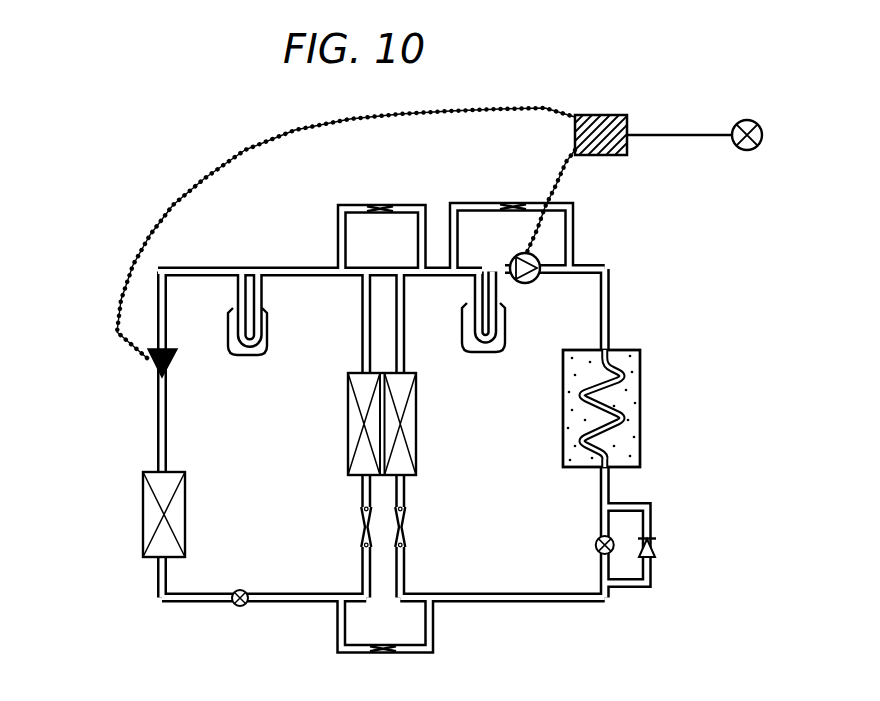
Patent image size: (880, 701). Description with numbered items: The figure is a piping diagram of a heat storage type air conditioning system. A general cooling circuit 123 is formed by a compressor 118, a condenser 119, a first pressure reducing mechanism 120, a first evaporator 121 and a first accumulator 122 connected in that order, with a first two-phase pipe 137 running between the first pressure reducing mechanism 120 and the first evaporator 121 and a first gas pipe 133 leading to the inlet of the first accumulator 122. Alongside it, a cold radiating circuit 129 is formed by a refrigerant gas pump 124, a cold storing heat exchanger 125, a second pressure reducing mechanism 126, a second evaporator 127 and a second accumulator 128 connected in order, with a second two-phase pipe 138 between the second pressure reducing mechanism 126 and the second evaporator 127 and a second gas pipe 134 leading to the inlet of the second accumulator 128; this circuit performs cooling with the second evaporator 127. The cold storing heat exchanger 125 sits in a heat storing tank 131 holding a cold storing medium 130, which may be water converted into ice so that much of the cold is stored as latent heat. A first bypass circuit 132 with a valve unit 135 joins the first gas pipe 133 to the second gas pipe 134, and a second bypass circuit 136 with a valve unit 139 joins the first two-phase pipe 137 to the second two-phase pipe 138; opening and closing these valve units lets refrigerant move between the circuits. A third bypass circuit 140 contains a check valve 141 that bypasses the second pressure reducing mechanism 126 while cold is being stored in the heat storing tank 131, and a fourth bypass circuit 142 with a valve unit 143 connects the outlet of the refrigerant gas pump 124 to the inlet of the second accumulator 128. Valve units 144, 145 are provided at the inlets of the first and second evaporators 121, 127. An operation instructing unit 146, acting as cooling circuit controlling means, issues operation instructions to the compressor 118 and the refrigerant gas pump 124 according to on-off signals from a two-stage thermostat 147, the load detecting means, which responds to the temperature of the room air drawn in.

The compressor 118 is at (172, 364).
The condenser 119 is at (186, 505).
The first pressure reducing mechanism 120 is at (247, 592).
The first evaporator 121 is at (352, 442).
The first accumulator 122 is at (253, 357).
The general cooling circuit 123 is at (293, 604).
The refrigerant gas pump 124 is at (534, 280).
The cold storing heat exchanger 125 is at (590, 413).
The second pressure reducing mechanism 126 is at (596, 545).
The second evaporator 127 is at (410, 442).
The second accumulator 128 is at (490, 352).
The cold radiating circuit 129 is at (505, 603).
The cold storing medium 130 is at (632, 385).
The heat storing tank 131 is at (641, 445).
The first bypass circuit 132 is at (339, 203).
The first gas pipe 133 is at (318, 277).
The supply line 134 is at (424, 277).
The valve unit 135 is at (380, 204).
The second bypass circuit 136 is at (412, 655).
The first two-phase pipe 137 is at (320, 593).
The second two-phase pipe 138 is at (465, 592).
The valve unit 139 is at (381, 655).
The third bypass circuit 140 is at (651, 590).
The check valve 141 is at (658, 547).
The fourth bypass circuit 142 is at (574, 203).
The valve unit 143 is at (515, 203).
The valve unit 144 is at (360, 535).
The valve unit 145 is at (406, 535).
The operation instructing unit 146 is at (628, 117).
The two-stage thermostat 147 is at (756, 124).